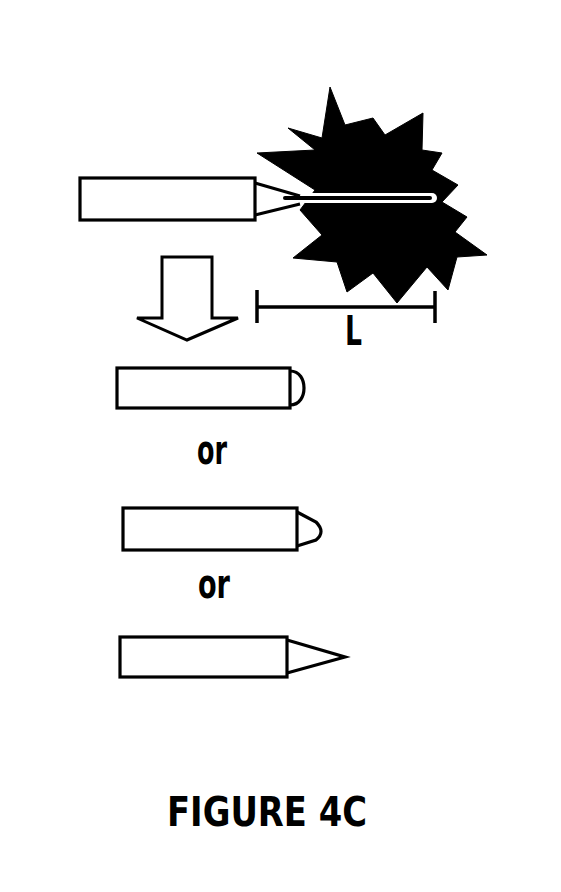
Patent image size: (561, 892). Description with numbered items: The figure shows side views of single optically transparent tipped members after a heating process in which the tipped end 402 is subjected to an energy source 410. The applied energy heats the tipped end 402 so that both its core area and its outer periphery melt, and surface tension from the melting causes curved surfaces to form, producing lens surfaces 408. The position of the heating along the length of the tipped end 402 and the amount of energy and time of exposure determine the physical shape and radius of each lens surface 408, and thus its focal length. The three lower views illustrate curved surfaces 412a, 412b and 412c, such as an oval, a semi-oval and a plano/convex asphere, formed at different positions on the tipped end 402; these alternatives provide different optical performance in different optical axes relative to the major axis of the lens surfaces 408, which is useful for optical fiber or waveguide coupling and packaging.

The tipped end 402 is at (293, 135).
The lens surface 408 is at (346, 656).
The energy source 410 is at (458, 160).
The curved surface 412a is at (303, 383).
The curved surface 412b is at (298, 545).
The curved surface 412c is at (313, 667).